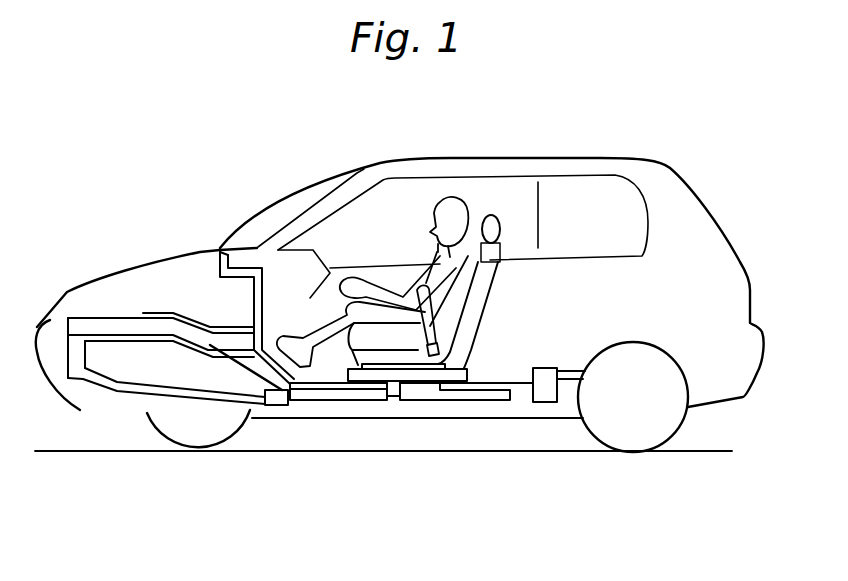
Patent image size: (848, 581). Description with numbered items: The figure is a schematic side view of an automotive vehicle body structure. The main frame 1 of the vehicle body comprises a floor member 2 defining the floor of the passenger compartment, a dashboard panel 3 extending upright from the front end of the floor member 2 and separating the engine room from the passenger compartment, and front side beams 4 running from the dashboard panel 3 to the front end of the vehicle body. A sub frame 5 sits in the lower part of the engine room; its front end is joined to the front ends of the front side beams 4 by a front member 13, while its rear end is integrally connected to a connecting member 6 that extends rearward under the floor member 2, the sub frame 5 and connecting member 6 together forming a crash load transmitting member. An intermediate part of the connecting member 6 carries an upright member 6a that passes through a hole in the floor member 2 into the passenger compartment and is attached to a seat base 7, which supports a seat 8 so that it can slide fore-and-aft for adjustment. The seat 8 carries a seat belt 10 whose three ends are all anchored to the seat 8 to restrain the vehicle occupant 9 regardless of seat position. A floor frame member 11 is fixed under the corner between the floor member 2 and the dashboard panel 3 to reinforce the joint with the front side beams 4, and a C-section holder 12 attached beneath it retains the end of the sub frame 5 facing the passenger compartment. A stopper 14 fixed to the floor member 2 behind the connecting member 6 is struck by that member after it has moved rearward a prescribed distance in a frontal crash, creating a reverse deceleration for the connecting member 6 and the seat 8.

The main frame 1 is at (437, 422).
The floor member 2 is at (508, 385).
The dashboard panel 3 is at (253, 300).
The front side beams 4 is at (118, 323).
The sub frame 5 is at (137, 392).
The connecting member 6 is at (360, 398).
The upright member 6a is at (400, 392).
The seat base 7 is at (462, 371).
The seat 8 is at (478, 297).
The vehicle occupant 9 is at (459, 200).
The seat belt 10 is at (410, 317).
The floor frame member 11 is at (242, 366).
The holder 12 is at (278, 404).
The front member 13 is at (38, 325).
The stopper 14 is at (543, 402).